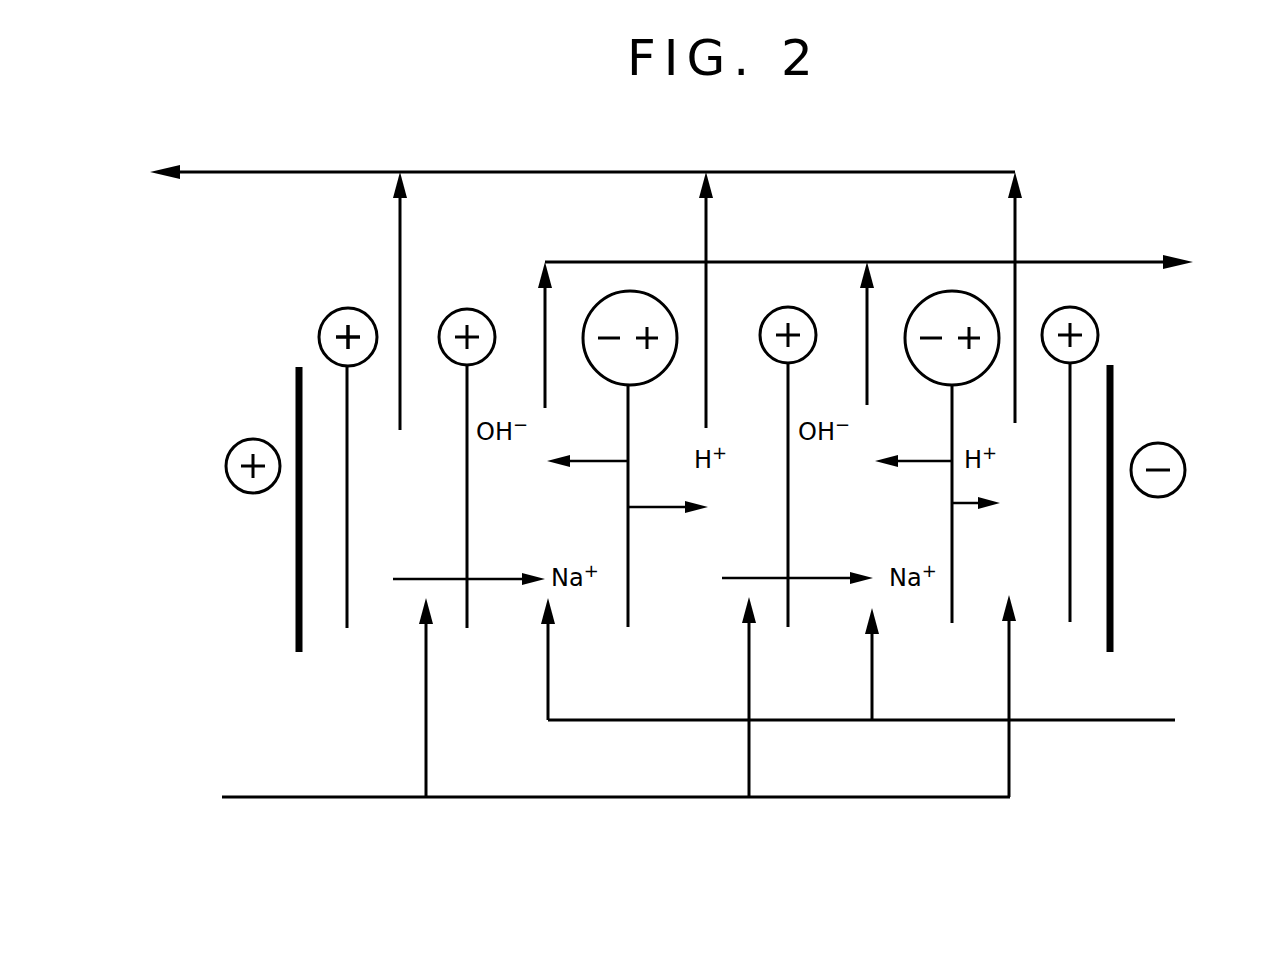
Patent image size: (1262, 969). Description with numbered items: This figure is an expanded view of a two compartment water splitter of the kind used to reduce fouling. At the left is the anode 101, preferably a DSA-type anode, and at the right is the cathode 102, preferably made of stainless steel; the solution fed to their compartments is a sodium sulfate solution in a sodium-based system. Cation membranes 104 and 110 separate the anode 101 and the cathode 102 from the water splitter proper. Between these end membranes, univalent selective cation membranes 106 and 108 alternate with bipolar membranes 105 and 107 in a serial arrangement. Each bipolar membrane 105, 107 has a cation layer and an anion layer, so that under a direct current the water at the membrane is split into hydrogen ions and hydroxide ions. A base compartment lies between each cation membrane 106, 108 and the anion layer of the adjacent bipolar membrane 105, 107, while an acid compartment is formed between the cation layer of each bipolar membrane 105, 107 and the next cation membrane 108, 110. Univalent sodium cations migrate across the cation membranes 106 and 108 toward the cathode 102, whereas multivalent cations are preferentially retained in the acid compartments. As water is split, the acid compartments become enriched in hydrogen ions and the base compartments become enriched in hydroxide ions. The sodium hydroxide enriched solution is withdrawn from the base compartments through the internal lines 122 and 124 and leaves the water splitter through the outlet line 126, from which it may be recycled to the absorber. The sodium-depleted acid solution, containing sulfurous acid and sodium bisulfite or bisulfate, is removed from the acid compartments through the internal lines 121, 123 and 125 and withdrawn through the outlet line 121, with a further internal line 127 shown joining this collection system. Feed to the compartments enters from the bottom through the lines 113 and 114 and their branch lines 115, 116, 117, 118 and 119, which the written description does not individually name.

The anode 101 is at (296, 424).
The cathode 102 is at (1115, 437).
The cation membrane 104 is at (345, 383).
The bipolar membrane 105 is at (624, 427).
The univalent selective cation membrane 106 is at (465, 433).
The bipolar membrane 107 is at (950, 438).
The univalent selective cation membrane 108 is at (786, 422).
The cation membrane 110 is at (1073, 380).
The feed line 113 is at (282, 796).
The feed line 114 is at (1137, 719).
The inlet 115 is at (423, 675).
The inlet 116 is at (545, 672).
The inlet 117 is at (746, 665).
The inlet 118 is at (868, 652).
The inlet 119 is at (1003, 648).
The outlet line 121 is at (217, 171).
The internal line 122 is at (541, 292).
The internal line 123 is at (396, 227).
The internal line 124 is at (862, 312).
The internal line 125 is at (702, 225).
The outlet line 126 is at (1107, 260).
The outlet 127 is at (1012, 238).